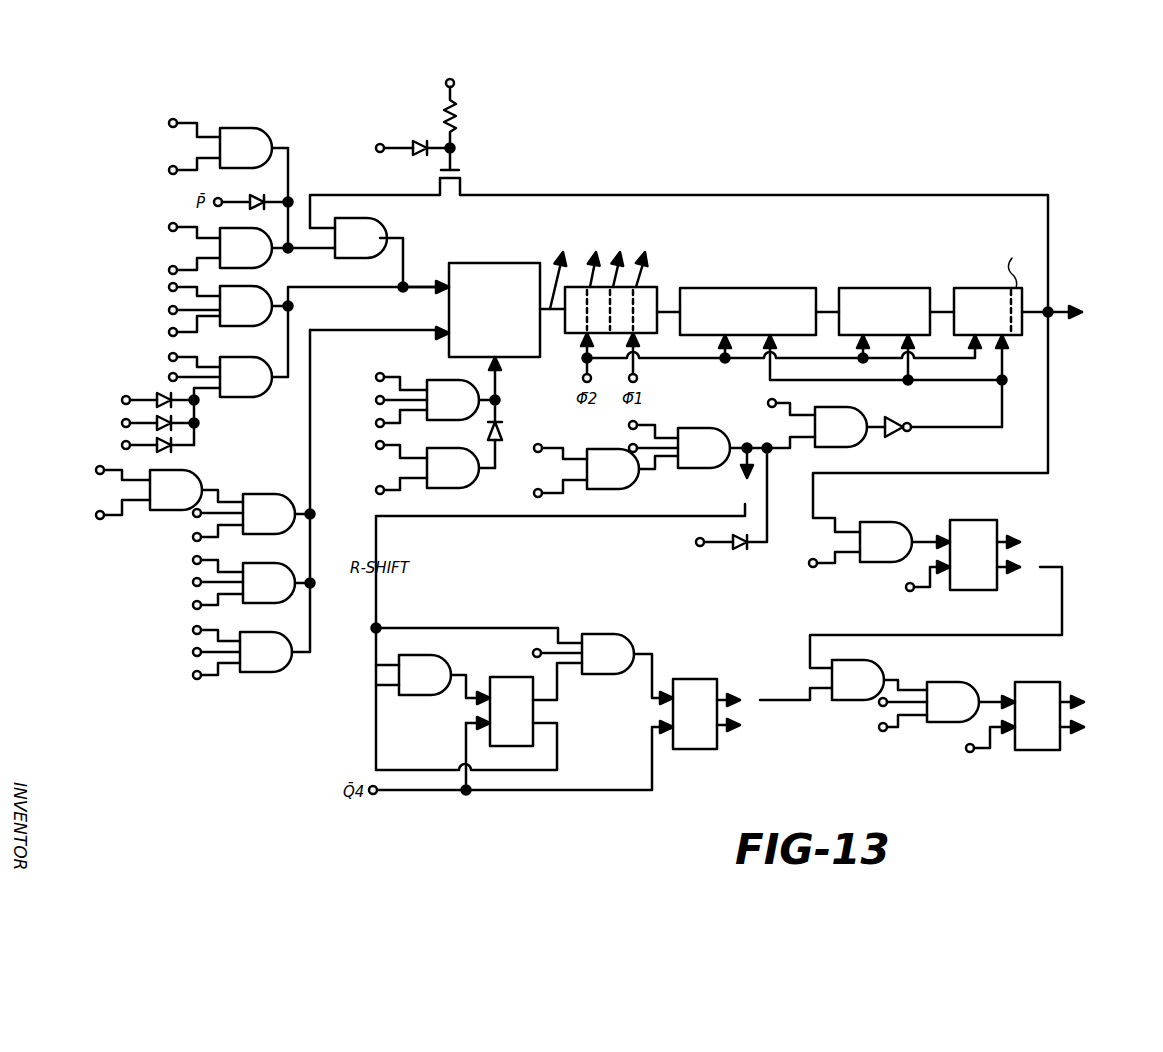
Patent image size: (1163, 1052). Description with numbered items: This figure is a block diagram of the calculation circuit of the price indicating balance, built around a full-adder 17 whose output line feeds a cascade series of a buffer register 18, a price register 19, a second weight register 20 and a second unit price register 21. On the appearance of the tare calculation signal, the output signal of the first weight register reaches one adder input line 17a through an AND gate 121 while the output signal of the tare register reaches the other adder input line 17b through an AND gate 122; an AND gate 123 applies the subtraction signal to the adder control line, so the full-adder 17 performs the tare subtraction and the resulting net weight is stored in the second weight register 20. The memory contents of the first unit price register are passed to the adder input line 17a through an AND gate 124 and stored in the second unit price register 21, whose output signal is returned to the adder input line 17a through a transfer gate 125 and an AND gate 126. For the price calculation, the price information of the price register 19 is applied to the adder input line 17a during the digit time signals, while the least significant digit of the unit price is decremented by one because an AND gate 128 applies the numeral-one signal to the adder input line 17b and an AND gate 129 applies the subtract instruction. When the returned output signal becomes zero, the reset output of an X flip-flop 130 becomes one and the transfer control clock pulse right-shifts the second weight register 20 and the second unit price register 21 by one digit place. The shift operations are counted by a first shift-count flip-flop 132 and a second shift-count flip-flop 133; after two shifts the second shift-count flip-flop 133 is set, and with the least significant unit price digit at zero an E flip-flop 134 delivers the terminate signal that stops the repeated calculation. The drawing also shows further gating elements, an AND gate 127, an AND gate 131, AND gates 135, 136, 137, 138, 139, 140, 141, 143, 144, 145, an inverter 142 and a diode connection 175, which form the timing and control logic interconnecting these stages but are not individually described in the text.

The full-adder 17 is at (490, 262).
The adder input line 17a is at (415, 280).
The other adder input line 17b is at (400, 328).
The buffer register 18 is at (650, 291).
The price register 19 is at (723, 290).
The second weight register 20 is at (890, 290).
The second unit price register 21 is at (965, 290).
The AND gate 121 is at (257, 394).
The AND gate 122 is at (280, 632).
The AND gate 123 is at (462, 382).
The AND gate 124 is at (258, 322).
The transfer gate 125 is at (462, 177).
The AND gate 126 is at (379, 232).
The AND gate 127 is at (284, 493).
The AND gate 128 is at (284, 563).
The AND gate 129 is at (462, 450).
The X flip-flop 130 is at (988, 508).
The AND gate 131 is at (848, 452).
The R1 flip-flop 132 is at (494, 684).
The R2 flip-flop 133 is at (696, 679).
The E flip-flop 134 is at (1058, 669).
The AND gate 135 is at (892, 526).
The AND gate 136 is at (434, 652).
The AND gate 137 is at (622, 626).
The AND gate 138 is at (866, 655).
The AND gate 139 is at (962, 676).
The AND gate 140 is at (601, 485).
The AND gate 141 is at (716, 428).
The inverter 142 is at (900, 438).
The AND gate 143 is at (241, 128).
The AND gate 144 is at (256, 263).
The AND gate 145 is at (184, 482).
The diode connection 175 is at (498, 393).